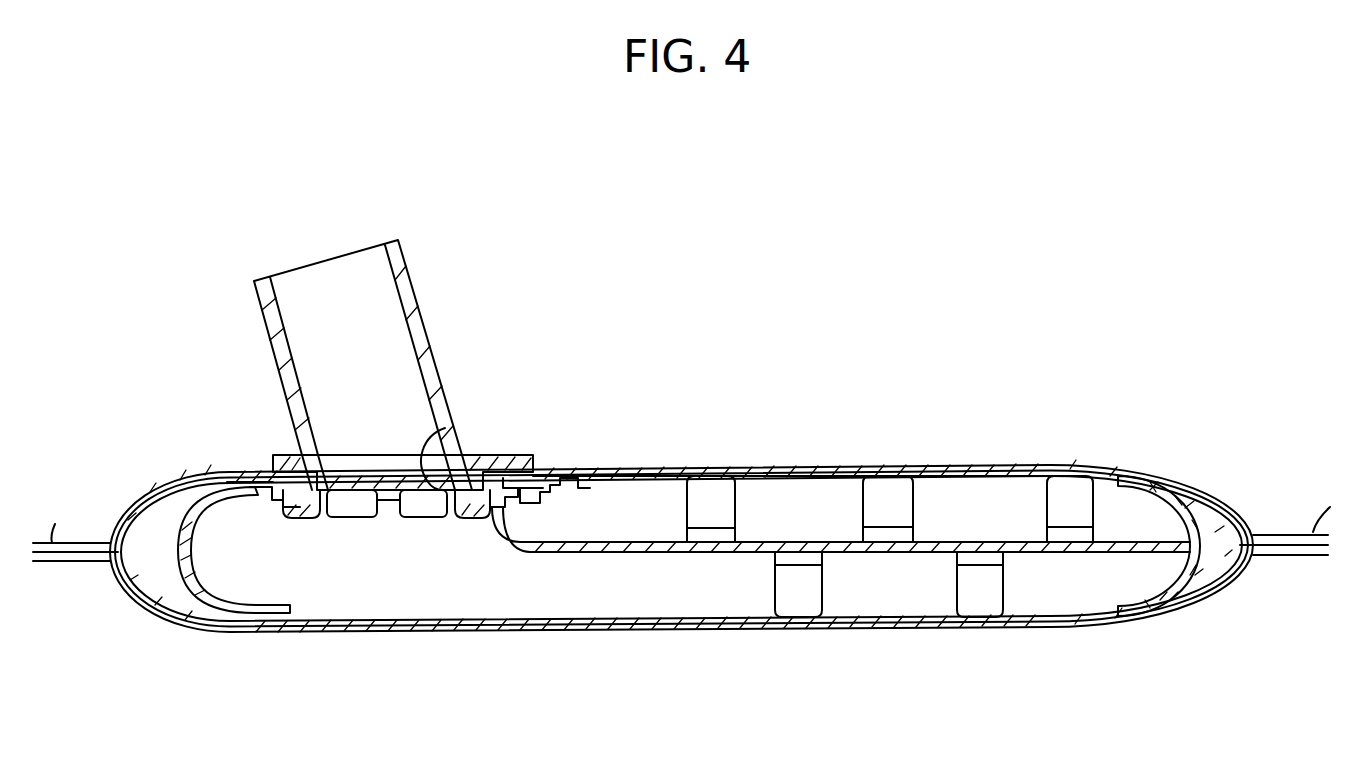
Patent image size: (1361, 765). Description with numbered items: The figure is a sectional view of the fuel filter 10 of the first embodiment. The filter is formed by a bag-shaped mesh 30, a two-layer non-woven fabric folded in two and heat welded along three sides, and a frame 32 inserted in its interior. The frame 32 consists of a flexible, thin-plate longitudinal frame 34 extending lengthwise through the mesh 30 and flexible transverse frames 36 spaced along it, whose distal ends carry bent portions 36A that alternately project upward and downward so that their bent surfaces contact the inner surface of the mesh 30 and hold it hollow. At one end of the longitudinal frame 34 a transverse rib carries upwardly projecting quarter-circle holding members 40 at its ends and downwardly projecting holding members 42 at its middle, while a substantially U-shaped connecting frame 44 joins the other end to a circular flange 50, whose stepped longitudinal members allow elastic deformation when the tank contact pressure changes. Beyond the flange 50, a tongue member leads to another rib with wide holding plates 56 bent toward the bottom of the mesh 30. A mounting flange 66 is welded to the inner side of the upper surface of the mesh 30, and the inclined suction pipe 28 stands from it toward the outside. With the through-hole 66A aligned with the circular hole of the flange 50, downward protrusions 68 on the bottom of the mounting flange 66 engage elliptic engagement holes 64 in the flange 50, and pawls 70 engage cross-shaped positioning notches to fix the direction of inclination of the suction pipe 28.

The fuel filter 10 is at (1078, 328).
The suction pipe 28 is at (410, 298).
The mesh 30 is at (702, 466).
The frame 32 is at (733, 570).
The longitudinal frame 34 is at (913, 550).
The transverse frames 36 is at (695, 537).
The bent portions 36A is at (723, 487).
The holding members 40 is at (1172, 473).
The holding members 42 is at (1190, 590).
The connecting frame 44 is at (563, 574).
The flange 50 is at (565, 468).
The holding plates 56 is at (220, 610).
The engagement holes 64 is at (283, 515).
The mounting flange 66 is at (497, 457).
The through-hole 66A is at (442, 432).
The protrusions 68 is at (300, 515).
The pawls 70 is at (418, 510).